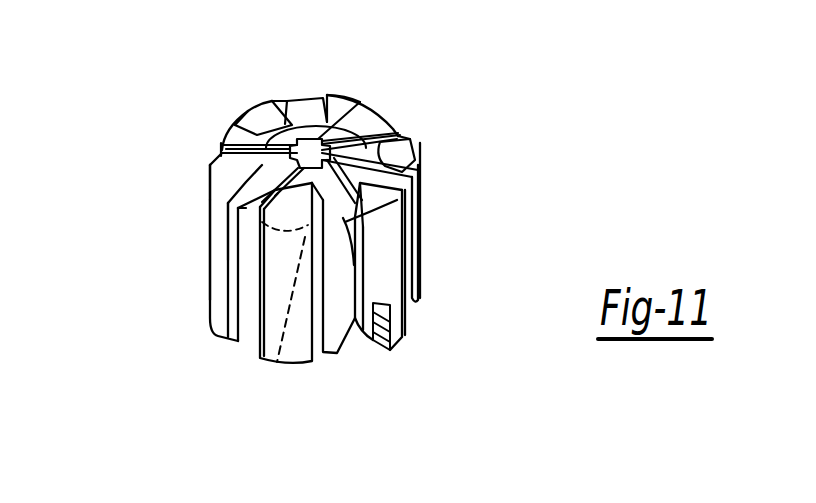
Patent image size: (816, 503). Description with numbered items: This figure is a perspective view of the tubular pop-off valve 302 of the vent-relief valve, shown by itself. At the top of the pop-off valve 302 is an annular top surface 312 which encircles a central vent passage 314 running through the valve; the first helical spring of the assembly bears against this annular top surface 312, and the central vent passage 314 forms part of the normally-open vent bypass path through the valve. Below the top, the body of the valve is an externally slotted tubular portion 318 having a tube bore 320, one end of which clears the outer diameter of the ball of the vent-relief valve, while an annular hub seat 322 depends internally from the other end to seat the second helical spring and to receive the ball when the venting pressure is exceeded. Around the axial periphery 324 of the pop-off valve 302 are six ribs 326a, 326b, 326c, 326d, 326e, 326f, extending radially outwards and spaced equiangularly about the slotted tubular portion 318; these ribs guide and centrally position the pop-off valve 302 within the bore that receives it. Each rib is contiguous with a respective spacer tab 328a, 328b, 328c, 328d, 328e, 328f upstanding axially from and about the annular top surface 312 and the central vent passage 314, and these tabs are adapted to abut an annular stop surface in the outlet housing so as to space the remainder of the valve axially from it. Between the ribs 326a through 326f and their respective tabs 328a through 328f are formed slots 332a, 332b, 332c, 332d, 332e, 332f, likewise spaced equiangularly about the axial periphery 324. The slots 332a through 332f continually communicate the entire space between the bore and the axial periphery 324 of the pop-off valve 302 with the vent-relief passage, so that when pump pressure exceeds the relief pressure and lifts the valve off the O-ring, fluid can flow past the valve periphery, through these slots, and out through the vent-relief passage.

The pop-off valve 302 is at (128, 48).
The annular top surface 312 is at (290, 125).
The central vent passage 314 is at (358, 110).
The externally slotted tubular portion 318 is at (202, 334).
The tube bore 320 is at (372, 340).
The annular hub seat 322 is at (277, 363).
The axial periphery 324 is at (307, 100).
The rib 326a is at (403, 132).
The rib 326b is at (420, 215).
The rib 326c is at (395, 348).
The rib 326d is at (289, 362).
The rib 326e is at (213, 333).
The rib 326f is at (221, 143).
The spacer tab 328a is at (350, 102).
The spacer tab 328b is at (420, 163).
The spacer tab 328c is at (397, 205).
The spacer tab 328d is at (305, 228).
The spacer tab 328e is at (217, 180).
The spacer tab 328f is at (245, 110).
The slot 332a is at (402, 133).
The slot 332b is at (416, 199).
The slot 332c is at (352, 268).
The slot 332d is at (243, 333).
The slot 332e is at (222, 147).
The slot 332f is at (357, 98).